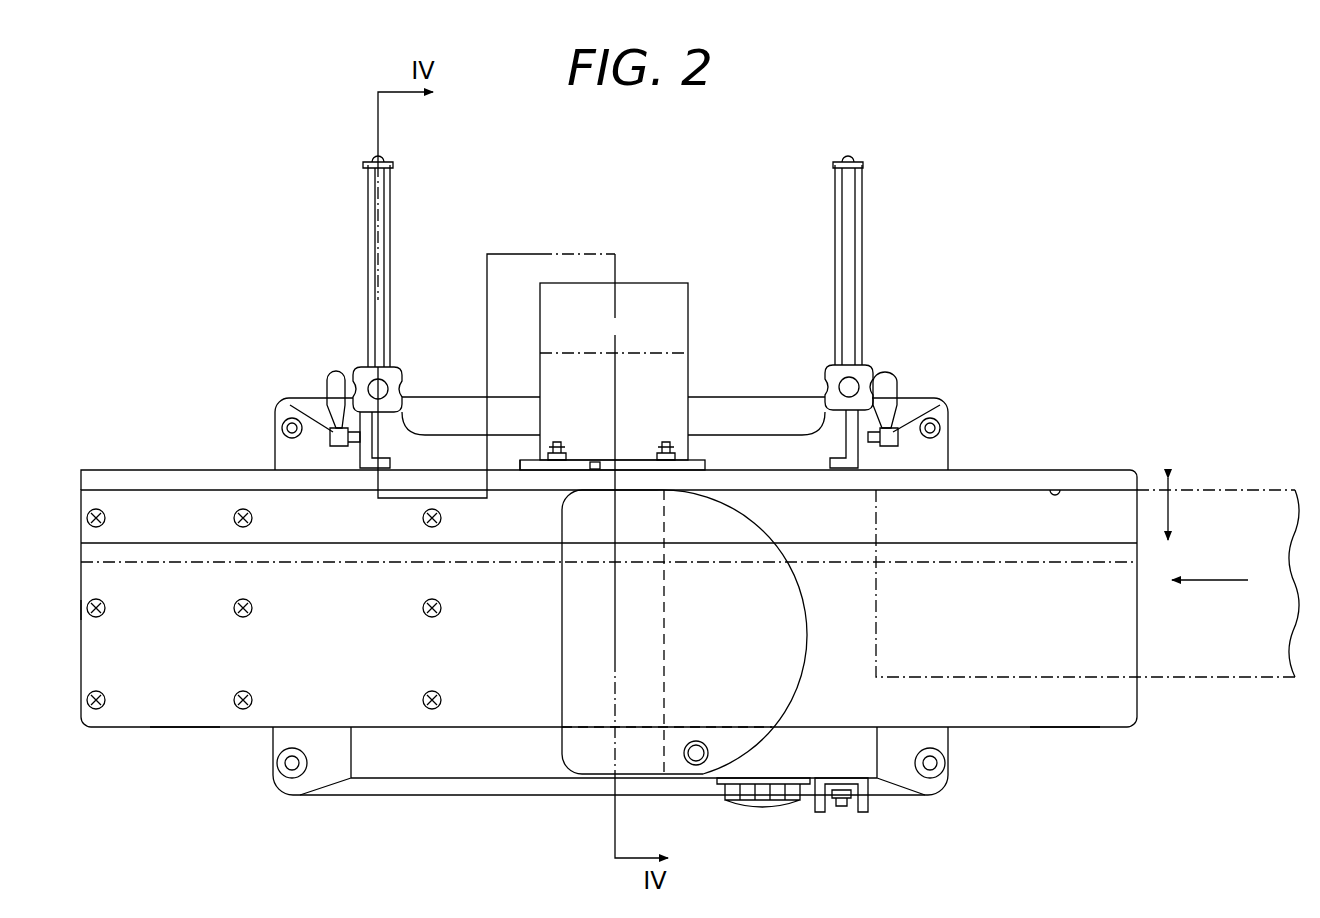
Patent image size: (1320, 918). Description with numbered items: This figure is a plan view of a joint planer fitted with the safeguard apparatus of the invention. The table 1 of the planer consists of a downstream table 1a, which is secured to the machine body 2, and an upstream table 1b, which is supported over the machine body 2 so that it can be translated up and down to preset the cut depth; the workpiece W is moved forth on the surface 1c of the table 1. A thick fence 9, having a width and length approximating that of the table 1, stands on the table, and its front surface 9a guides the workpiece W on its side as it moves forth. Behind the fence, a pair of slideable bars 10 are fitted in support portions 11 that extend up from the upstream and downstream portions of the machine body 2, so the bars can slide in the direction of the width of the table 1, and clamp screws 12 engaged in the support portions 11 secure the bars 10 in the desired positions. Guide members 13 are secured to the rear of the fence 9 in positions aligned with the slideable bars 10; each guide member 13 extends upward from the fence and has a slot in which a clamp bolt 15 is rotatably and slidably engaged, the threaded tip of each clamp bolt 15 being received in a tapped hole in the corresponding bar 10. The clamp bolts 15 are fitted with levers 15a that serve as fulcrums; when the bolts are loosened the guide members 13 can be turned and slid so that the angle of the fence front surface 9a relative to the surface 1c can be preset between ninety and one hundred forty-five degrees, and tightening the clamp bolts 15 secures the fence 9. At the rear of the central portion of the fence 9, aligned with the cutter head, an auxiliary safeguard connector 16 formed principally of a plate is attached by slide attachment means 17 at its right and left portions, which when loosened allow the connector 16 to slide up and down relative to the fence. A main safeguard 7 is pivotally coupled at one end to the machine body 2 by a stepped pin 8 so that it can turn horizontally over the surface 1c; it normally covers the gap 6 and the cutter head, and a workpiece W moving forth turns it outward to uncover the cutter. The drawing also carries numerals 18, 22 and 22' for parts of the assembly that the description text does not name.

The table 1 is at (80, 587).
The downstream table 1a is at (182, 728).
The upstream table 1b is at (1066, 728).
The surface of table 1c is at (118, 640).
The machine body 2 is at (460, 797).
The gap 6 is at (664, 612).
The main safeguard 7 is at (562, 620).
The stepped pin 8 is at (696, 766).
The fence 9 is at (1012, 468).
The front surface of fence 9a is at (1058, 489).
The slideable bars 10 is at (368, 180).
The support portions 11 is at (402, 368).
The clamp screws 12 is at (365, 375).
The guide members 13 is at (366, 460).
The clamp bolts 15 is at (350, 445).
The levers 15a is at (331, 390).
The auxiliary safeguard connector 16 is at (599, 470).
The slide attachment means 17 is at (556, 445).
The block 18 is at (648, 283).
The rail 22 is at (647, 435).
The rail 22' is at (511, 494).
The workpiece W is at (1237, 510).